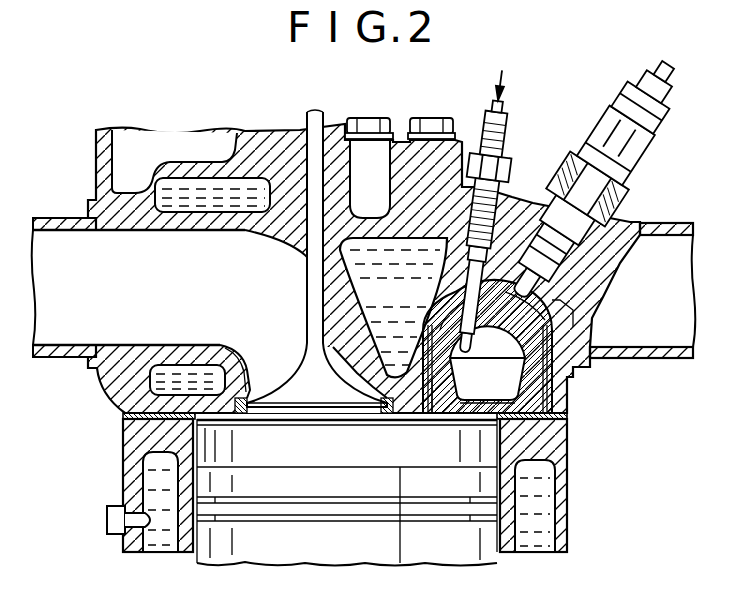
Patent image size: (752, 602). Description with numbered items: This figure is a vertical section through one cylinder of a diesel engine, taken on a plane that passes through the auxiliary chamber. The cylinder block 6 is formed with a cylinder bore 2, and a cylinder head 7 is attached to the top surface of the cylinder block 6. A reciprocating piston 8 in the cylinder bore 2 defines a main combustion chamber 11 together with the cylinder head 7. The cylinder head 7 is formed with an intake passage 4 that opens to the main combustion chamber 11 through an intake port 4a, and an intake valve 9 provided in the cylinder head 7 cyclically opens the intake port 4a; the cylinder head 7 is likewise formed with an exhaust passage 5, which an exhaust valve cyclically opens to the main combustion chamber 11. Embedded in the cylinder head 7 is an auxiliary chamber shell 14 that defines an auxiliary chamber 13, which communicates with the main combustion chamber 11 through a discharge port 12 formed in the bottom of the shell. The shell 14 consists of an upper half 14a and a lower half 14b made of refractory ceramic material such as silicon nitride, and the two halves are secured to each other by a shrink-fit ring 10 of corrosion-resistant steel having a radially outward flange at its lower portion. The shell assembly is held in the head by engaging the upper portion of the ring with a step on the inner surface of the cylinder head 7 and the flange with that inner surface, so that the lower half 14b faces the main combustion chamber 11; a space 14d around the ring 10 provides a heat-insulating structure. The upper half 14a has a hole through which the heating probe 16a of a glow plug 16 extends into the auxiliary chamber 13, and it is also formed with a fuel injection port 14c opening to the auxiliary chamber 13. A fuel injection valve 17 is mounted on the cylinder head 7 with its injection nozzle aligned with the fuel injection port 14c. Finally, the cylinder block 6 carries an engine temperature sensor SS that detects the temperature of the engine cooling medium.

The cylinder bore 2 is at (195, 428).
The intake passage 4 is at (162, 311).
The intake port 4a is at (248, 378).
The exhaust passage 5 is at (672, 320).
The cylinder block 6 is at (558, 448).
The cylinder head 7 is at (402, 158).
The piston 8 is at (283, 482).
The intake valve 9 is at (280, 390).
The shrink-fit ring 10 is at (580, 374).
The main combustion chamber 11 is at (364, 455).
The discharge port 12 is at (493, 421).
The auxiliary chamber 13 is at (496, 392).
The auxiliary chamber shell 14 is at (556, 387).
The upper half 14a is at (548, 343).
The lower half 14b is at (547, 421).
The fuel injection port 14c is at (560, 301).
The space 14d is at (446, 422).
The glow plug 16 is at (503, 151).
The heating probe 16a is at (422, 292).
The fuel injection valve 17 is at (582, 152).
The engine temperature sensor SS is at (107, 520).